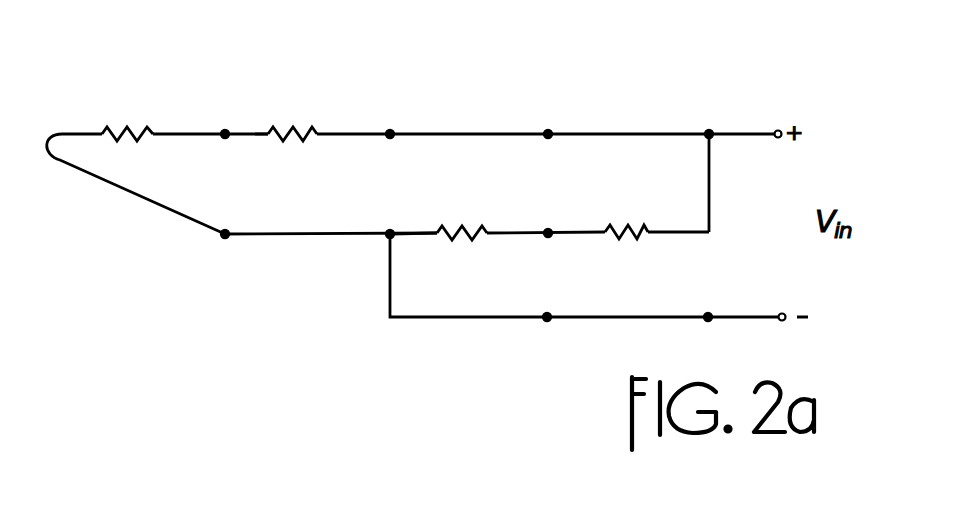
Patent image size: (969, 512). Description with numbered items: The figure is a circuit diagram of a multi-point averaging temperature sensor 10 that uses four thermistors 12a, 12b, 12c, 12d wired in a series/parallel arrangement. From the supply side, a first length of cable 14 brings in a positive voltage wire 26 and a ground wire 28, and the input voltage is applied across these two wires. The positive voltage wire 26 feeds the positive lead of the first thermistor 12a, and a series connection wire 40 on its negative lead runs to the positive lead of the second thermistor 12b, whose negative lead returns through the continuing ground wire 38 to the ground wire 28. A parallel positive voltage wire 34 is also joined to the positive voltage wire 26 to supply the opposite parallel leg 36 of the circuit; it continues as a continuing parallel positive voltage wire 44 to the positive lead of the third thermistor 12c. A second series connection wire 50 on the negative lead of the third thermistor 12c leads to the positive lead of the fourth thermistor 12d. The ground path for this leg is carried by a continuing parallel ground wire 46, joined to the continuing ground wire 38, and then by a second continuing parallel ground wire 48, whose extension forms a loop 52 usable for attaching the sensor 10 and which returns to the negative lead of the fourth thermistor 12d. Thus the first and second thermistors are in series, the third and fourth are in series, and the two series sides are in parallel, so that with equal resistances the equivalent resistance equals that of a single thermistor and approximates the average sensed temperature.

The multi-point averaging temperature sensor 10 is at (427, 194).
The first thermistor 12a is at (618, 219).
The second thermistor 12b is at (456, 216).
The third thermistor 12c is at (302, 125).
The fourth thermistor 12d is at (117, 125).
The first length of cable 14 is at (745, 128).
The positive voltage wire 26 is at (711, 182).
The ground wire 28 is at (655, 320).
The parallel positive voltage wire 34 is at (598, 133).
The opposite parallel leg 36 is at (280, 106).
The continuing ground wire 38 is at (458, 320).
The series connection wire 40 is at (570, 236).
The continuing parallel positive voltage wire 44 is at (446, 133).
The continuing parallel ground wire 46 is at (402, 196).
The second continuing parallel ground wire 48 is at (283, 236).
The second series connection wire 50 is at (224, 129).
The loop 52 is at (119, 190).